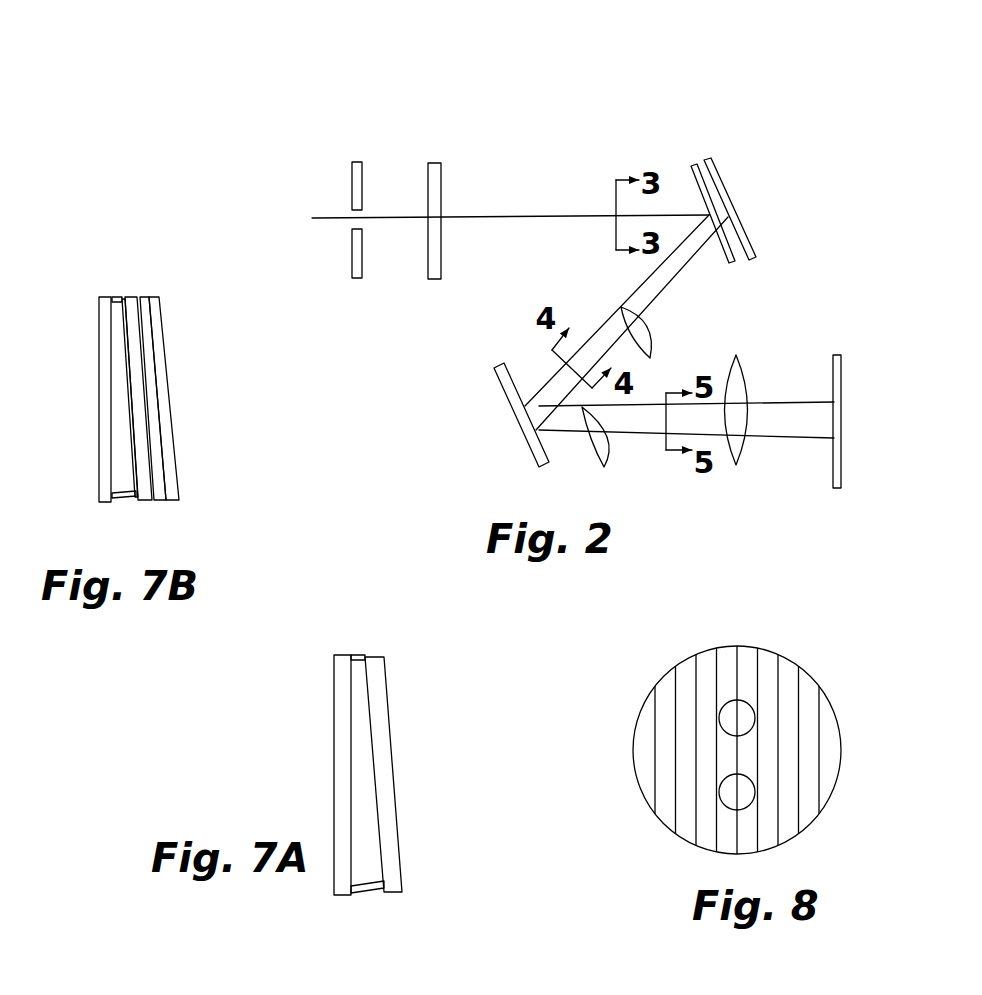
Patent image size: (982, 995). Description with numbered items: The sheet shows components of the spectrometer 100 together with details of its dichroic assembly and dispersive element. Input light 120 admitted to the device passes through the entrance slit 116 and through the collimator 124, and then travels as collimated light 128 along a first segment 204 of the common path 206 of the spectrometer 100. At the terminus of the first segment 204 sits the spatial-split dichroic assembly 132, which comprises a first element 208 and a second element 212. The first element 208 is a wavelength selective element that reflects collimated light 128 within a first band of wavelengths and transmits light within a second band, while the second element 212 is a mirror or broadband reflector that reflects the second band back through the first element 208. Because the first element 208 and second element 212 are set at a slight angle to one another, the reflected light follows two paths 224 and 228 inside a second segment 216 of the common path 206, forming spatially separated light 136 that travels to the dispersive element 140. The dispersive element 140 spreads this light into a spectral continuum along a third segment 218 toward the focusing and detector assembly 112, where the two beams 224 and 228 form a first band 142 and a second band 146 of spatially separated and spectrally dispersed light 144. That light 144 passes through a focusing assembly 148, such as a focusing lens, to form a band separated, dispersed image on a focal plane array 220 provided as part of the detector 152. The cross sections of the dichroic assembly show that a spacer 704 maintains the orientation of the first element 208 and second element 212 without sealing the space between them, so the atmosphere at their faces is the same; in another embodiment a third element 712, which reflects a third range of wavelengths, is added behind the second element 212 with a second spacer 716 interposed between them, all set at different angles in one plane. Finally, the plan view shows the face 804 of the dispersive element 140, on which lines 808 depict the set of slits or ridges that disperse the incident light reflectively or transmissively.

In FIG. 2, the spectrometer 100 is at (562, 108).
In FIG. 2, the focusing and detector assembly 112 is at (812, 333).
In FIG. 2, the entrance slit 116 is at (361, 160).
In FIG. 2, the input light 120 is at (330, 218).
In FIG. 2, the collimator 124 is at (439, 161).
In FIG. 2, the collimated light 128 is at (573, 215).
In FIG. 2, the spatial-split dichroic assembly 132 is at (707, 142).
In FIG. 2, the spatially separated light 136 is at (657, 344).
In FIG. 2, the dispersive element 140 is at (513, 407).
In FIG. 8, the dispersive element 140 is at (833, 702).
In FIG. 2, the first band 142 is at (773, 403).
In FIG. 2, the spatially separated and spectrally dispersed light 144 is at (592, 454).
In FIG. 2, the second band 146 is at (768, 438).
In FIG. 2, the focusing assembly 148 is at (735, 372).
In FIG. 2, the detector 152 is at (837, 352).
In FIG. 2, the first segment 204 is at (525, 198).
In FIG. 2, the common path 206 is at (472, 285).
In FIG. 2, the first element 208 is at (731, 265).
In FIG. 7B, the first element 208 is at (98, 428).
In FIG. 7A, the first element 208 is at (335, 722).
In FIG. 2, the second element 212 is at (757, 258).
In FIG. 7B, the second element 212 is at (127, 297).
In FIG. 7A, the second element 212 is at (392, 720).
In FIG. 2, the second segment 216 is at (610, 302).
In FIG. 2, the third segment 218 is at (677, 467).
In FIG. 2, the focal plane array 220 is at (835, 482).
In FIG. 2, the first path (light in the first band of wavelengths) 224 is at (642, 285).
In FIG. 8, the first path (light in the first band of wavelengths) 224 is at (748, 702).
In FIG. 2, the second path (light in the second band of wavelengths) 228 is at (663, 291).
In FIG. 8, the second path (light in the second band of wavelengths) 228 is at (757, 790).
In FIG. 7B, the spacer 704 is at (118, 297).
In FIG. 7A, the spacer 704 is at (363, 655).
In FIG. 7B, the third element 712 is at (178, 494).
In FIG. 7B, the second spacer 716 is at (145, 290).
In FIG. 2, the face of the dispersive element 804 is at (513, 370).
In FIG. 8, the face of the dispersive element 804 is at (748, 663).
In FIG. 8, the lines 808 is at (675, 687).